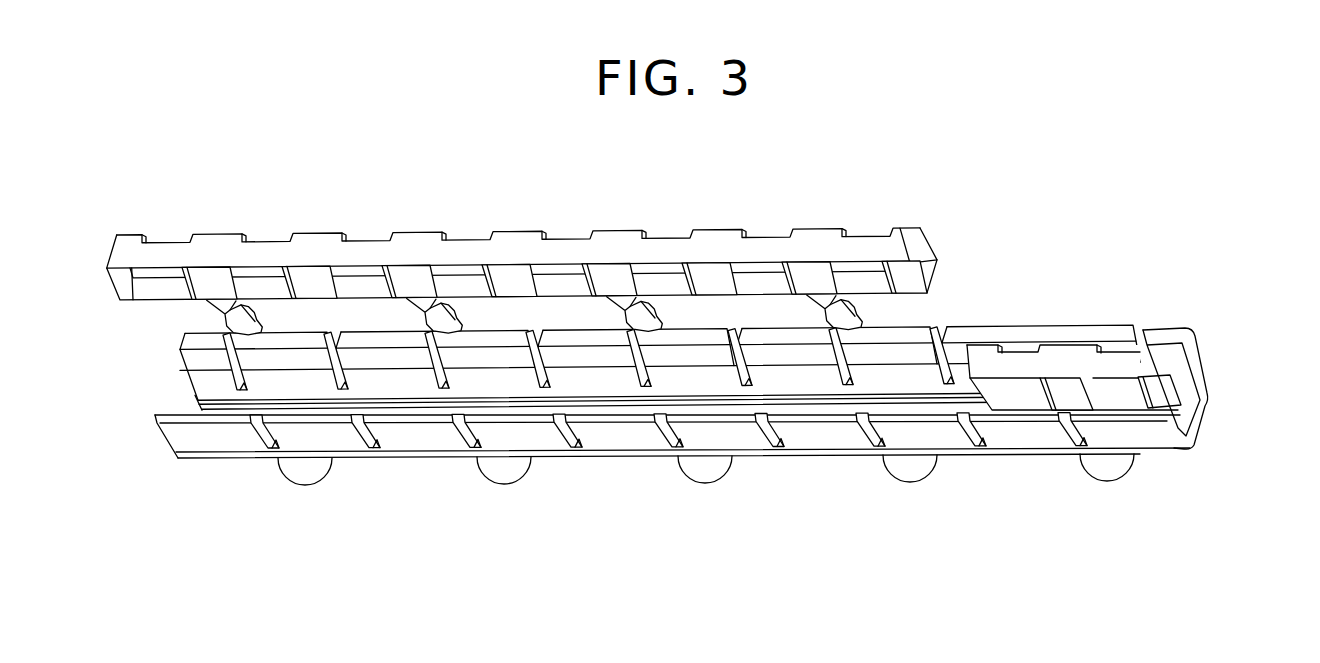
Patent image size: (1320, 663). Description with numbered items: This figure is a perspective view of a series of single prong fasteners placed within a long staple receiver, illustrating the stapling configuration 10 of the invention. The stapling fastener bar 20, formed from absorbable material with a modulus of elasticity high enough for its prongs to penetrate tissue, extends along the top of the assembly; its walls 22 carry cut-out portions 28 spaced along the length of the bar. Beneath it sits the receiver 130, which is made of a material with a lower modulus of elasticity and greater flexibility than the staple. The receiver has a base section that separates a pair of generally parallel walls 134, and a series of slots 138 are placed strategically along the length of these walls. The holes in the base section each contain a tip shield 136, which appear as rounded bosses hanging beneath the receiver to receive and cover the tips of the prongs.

The stapling configuration 10 is at (118, 213).
The stapling fastener bar 20 is at (470, 234).
The walls 22 is at (510, 265).
The cut-out portions 28 is at (535, 314).
The receiver 130 is at (742, 453).
The parallel walls 134 is at (1021, 440).
The tip shield 136 is at (901, 478).
The slots 138 is at (1073, 447).